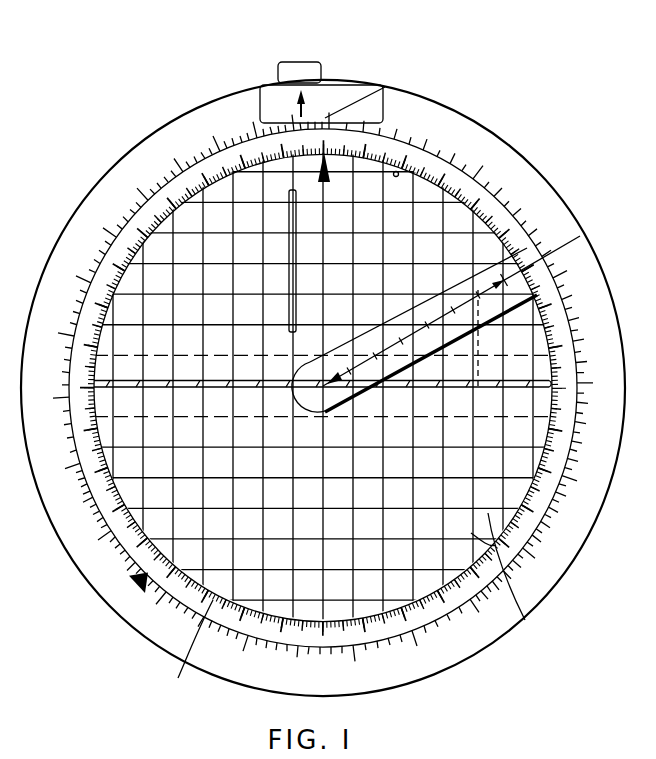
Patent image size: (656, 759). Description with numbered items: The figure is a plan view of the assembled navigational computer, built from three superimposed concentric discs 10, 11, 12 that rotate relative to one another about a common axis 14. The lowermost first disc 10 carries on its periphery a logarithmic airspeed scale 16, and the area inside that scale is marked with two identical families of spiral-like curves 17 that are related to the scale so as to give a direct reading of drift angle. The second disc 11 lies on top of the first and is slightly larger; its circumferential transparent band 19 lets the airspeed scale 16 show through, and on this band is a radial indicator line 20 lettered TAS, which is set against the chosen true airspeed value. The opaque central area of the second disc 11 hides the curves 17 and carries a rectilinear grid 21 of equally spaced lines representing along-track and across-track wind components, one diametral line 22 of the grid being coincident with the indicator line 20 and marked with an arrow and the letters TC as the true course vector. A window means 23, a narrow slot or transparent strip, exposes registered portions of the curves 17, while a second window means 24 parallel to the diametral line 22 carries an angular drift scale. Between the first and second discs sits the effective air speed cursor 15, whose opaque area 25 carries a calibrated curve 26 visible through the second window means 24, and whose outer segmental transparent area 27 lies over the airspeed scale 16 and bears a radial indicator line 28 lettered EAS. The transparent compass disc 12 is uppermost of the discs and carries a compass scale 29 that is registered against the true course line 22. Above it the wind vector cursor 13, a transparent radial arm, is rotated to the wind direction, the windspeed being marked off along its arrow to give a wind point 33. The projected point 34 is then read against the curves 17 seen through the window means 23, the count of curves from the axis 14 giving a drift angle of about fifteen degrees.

The first disc 10 is at (57, 545).
The second disc 11 is at (100, 581).
The compass disc 12 is at (138, 579).
The wind vector cursor 13 is at (430, 295).
The common axis 14 is at (298, 410).
The effective air speed cursor 15 is at (289, 52).
The airspeed scale 16 is at (143, 158).
The spiral-like curves 17 is at (132, 388).
The transparent band 19 is at (468, 138).
The radial indicator line 20 is at (374, 84).
The rectilinear grid 21 is at (527, 608).
The diametral line 22 is at (326, 250).
The window means 23 is at (513, 392).
The second window means 24 is at (298, 284).
The opaque area 25 is at (431, 353).
The calibrated curve 26 is at (298, 229).
The outer segmental transparent area 27 is at (263, 88).
The radial indicator line 28 is at (323, 82).
The compass scale 29 is at (186, 650).
The wind point 33 is at (466, 302).
The projected point 34 is at (481, 388).